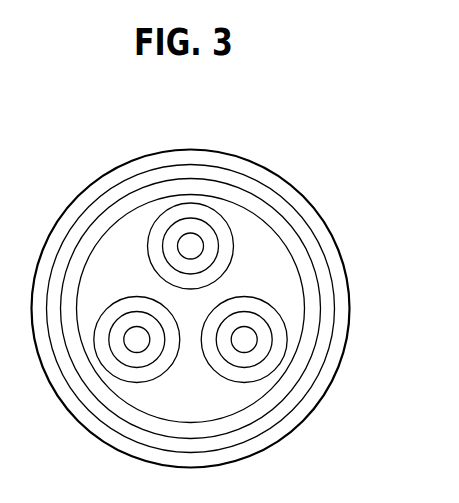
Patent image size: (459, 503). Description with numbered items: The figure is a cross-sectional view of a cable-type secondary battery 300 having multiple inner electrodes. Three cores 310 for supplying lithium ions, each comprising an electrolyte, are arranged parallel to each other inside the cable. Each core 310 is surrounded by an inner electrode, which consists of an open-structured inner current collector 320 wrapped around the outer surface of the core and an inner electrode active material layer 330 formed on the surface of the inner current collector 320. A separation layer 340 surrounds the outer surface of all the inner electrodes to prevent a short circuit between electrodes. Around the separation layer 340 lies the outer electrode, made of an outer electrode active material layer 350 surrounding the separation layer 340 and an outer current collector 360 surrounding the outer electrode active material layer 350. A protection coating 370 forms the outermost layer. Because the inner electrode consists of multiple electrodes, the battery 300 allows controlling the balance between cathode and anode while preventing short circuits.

The cable-type secondary battery 300 is at (308, 153).
The core for supplying lithium ions 310 is at (183, 243).
The inner current collector 320 is at (187, 225).
The inner electrode active material layer 330 is at (202, 215).
The separation layer 340 is at (277, 250).
The outer electrode active material layer 350 is at (305, 260).
The outer current collector 360 is at (325, 282).
The protection coating 370 is at (340, 303).